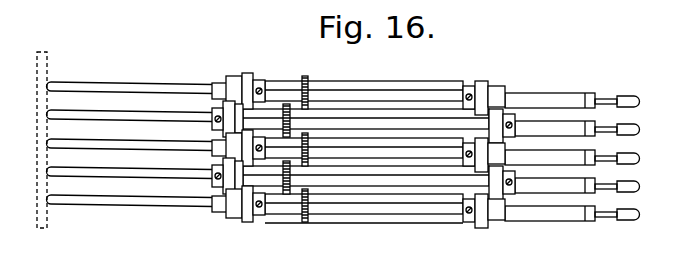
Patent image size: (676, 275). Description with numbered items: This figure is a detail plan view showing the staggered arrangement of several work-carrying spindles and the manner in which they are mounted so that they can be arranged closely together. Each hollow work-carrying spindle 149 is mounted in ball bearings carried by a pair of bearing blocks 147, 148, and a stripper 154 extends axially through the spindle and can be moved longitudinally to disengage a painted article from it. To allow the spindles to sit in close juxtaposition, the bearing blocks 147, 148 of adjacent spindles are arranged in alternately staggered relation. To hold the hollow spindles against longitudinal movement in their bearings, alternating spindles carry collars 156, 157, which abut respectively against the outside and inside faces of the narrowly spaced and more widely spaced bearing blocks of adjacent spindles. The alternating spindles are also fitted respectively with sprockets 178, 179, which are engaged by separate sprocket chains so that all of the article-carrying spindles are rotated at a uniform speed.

The bearing block 147 is at (485, 228).
The bearing block 148 is at (243, 216).
The hollow work-carrying spindle 149 is at (401, 210).
The stripper 154 is at (115, 206).
The collar 156 is at (214, 166).
The collar 157 is at (497, 199).
The sprocket 178 is at (306, 221).
The sprocket 179 is at (290, 176).